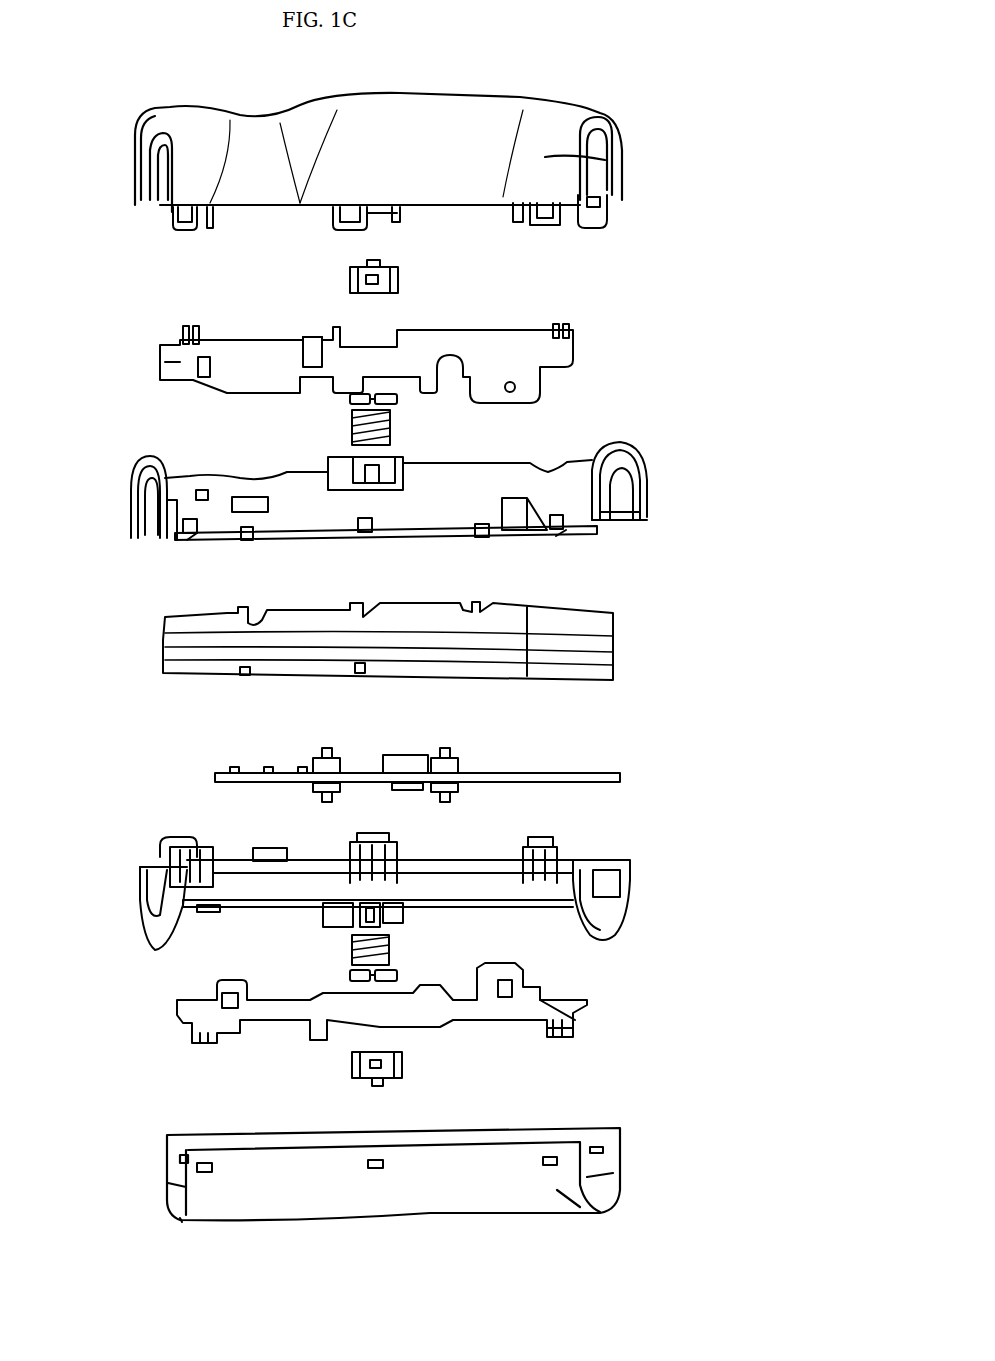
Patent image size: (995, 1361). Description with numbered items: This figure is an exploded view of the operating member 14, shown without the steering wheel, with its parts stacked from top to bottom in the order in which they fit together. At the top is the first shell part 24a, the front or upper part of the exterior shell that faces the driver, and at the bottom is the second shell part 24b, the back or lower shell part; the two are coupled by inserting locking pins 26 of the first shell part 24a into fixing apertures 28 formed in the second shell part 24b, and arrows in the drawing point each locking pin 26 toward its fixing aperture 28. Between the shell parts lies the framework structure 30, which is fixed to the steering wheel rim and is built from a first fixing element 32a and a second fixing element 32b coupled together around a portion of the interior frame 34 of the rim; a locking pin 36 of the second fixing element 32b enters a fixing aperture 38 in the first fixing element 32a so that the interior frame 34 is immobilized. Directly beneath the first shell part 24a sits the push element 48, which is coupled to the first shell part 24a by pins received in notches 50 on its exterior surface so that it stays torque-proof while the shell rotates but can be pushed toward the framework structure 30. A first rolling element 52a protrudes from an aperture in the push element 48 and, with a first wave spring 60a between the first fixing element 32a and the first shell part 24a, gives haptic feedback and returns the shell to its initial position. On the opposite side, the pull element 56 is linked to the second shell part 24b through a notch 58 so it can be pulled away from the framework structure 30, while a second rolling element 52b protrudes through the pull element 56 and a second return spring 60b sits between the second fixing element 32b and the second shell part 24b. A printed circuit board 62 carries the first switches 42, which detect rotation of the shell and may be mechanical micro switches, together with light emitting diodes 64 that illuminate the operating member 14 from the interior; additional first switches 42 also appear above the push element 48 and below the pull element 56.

The operating member 14 is at (130, 1222).
The first shell part 24a is at (605, 160).
The second shell part 24b is at (556, 1192).
The locking pin 26 is at (172, 226).
The fixing aperture 28 is at (203, 1097).
The framework structure 30 is at (665, 507).
The first fixing element 32a is at (625, 462).
The second fixing element 32b is at (605, 918).
The interior frame 34 is at (180, 633).
The locking pin 36 is at (178, 849).
The fixing aperture 38 is at (197, 535).
The first switch 42 is at (400, 280).
The push element 48 is at (545, 352).
The notch 50 is at (190, 283).
The first rolling element 52a is at (350, 400).
The second rolling element 52b is at (350, 976).
The pull element 56 is at (545, 1000).
The notch 58 is at (555, 1037).
The first wave spring 60a is at (392, 428).
The second return spring 60b is at (390, 948).
The printed circuit board 62 is at (600, 775).
The light emitting diode 64 is at (302, 766).